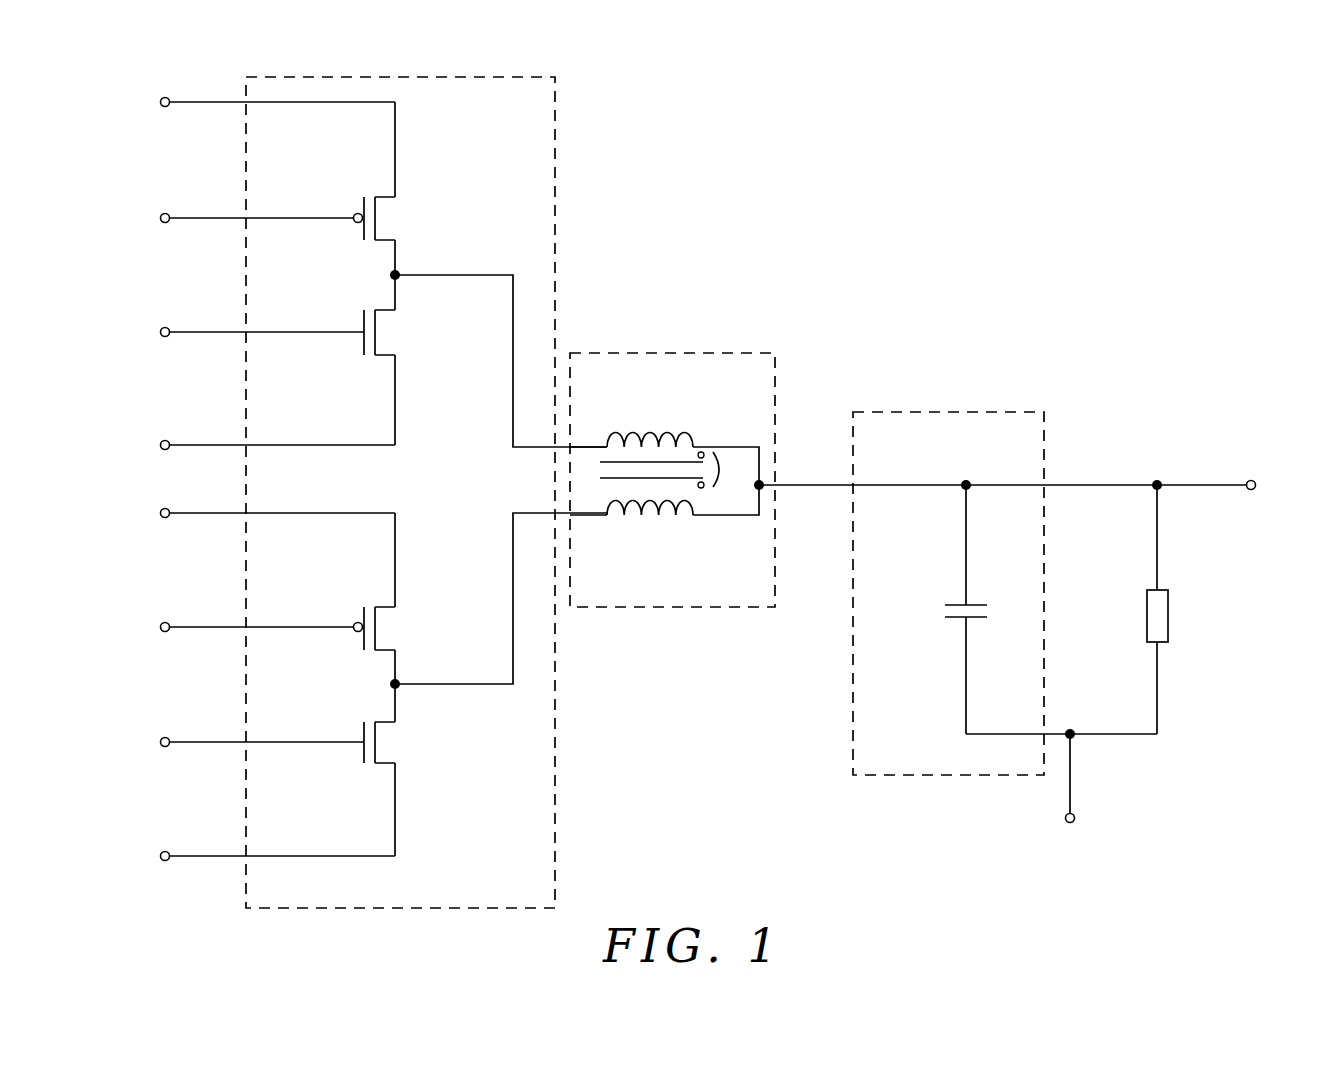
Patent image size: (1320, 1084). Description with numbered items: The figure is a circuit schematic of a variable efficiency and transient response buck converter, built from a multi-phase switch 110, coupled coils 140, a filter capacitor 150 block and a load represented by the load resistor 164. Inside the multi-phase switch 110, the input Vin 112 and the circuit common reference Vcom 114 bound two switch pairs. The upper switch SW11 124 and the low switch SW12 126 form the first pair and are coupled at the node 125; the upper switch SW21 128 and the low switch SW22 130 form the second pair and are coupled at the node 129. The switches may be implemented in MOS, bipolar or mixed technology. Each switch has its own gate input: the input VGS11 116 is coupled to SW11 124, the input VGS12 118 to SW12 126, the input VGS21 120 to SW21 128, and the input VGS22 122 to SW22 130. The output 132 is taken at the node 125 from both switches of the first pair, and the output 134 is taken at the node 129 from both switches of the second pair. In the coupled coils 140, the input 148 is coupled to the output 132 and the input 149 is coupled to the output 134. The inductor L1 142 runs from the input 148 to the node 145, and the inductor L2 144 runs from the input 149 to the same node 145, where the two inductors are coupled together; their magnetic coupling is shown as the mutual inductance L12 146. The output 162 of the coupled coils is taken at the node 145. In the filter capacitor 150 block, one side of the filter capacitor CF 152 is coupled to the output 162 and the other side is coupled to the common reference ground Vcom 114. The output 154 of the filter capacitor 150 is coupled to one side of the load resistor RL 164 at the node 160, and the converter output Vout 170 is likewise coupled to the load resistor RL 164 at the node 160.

The multi-phase switch 110 is at (468, 77).
The input Vin 112 is at (194, 101).
The circuit common reference Vcom 114 is at (194, 444).
The input VGS11 116 is at (194, 217).
The input VGS12 118 is at (194, 331).
The input VGS21 120 is at (194, 626).
The input VGS22 122 is at (194, 741).
The upper switch SW11 124 is at (398, 235).
The node 125 is at (394, 275).
The low switch SW12 126 is at (398, 350).
The upper switch SW21 128 is at (398, 645).
The node 129 is at (394, 684).
The low switch SW22 130 is at (398, 760).
The output from the upper switch SW11 and the low switch SW12 132 is at (513, 415).
The output from the upper switch SW21 and the low switch SW22 134 is at (513, 588).
The coupled coils 140 is at (728, 353).
The inductor L1 142 is at (703, 428).
The inductor L2 144 is at (705, 535).
The node 145 is at (764, 488).
The mutual inductance L12 146 is at (733, 470).
The input to the inductor L1 148 is at (586, 447).
The input to the inductor L2 149 is at (586, 515).
The filter capacitor 150 is at (947, 412).
The filter capacitor CF 152 is at (938, 608).
The output of the filter capacitor 154 is at (993, 471).
The node 160 is at (1157, 483).
The output 162 is at (815, 483).
The load resistor RL 164 is at (1172, 600).
The output Vout 170 is at (1190, 484).